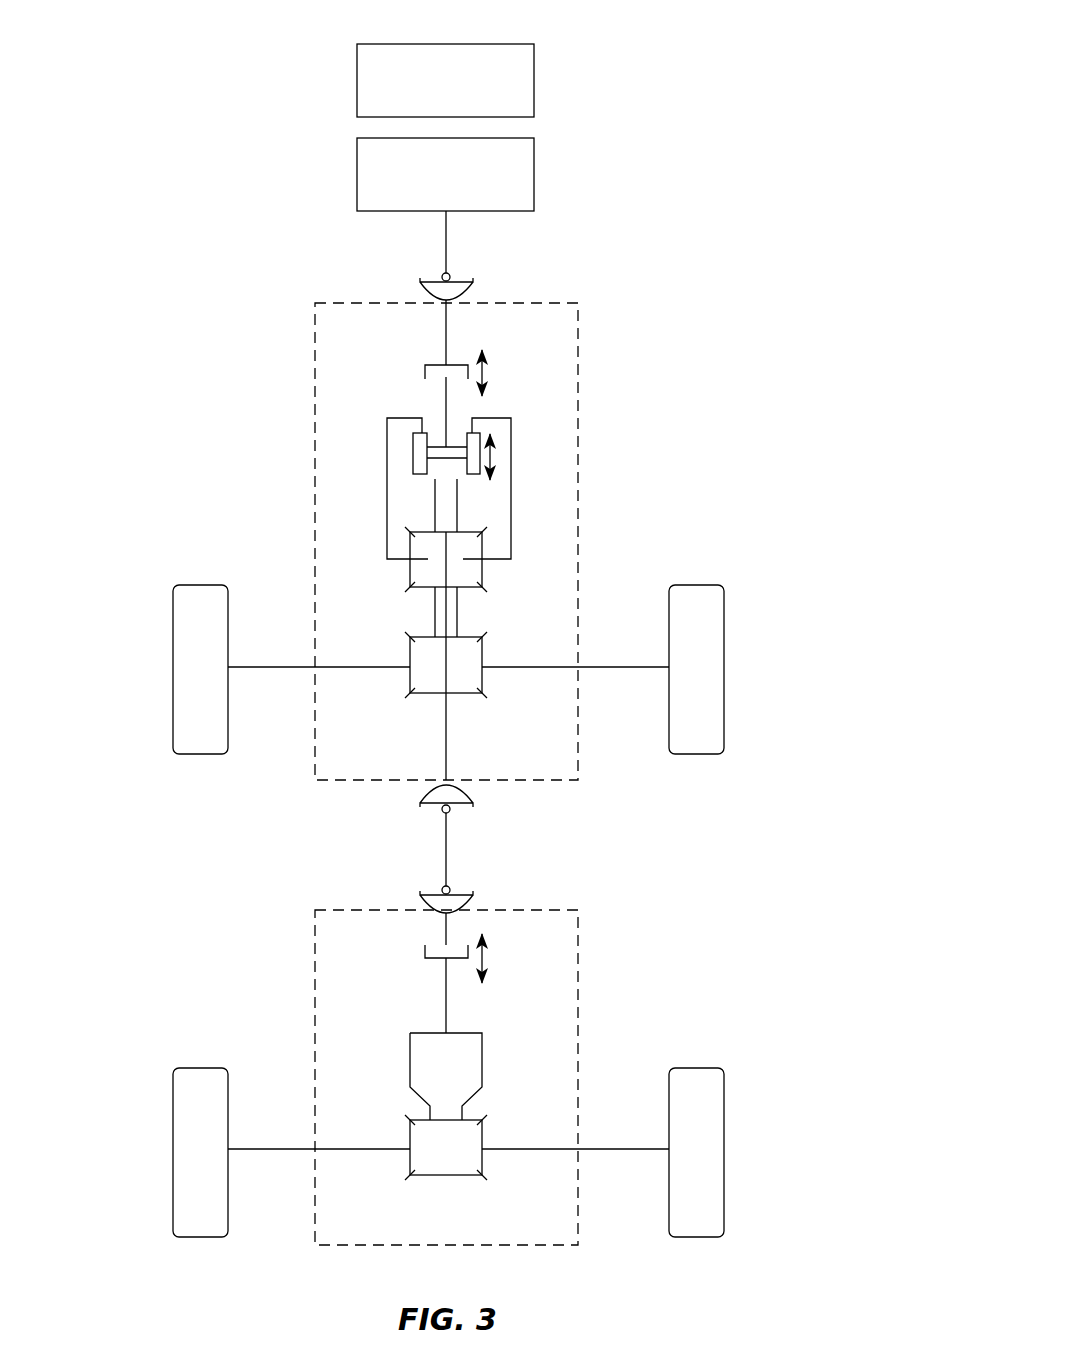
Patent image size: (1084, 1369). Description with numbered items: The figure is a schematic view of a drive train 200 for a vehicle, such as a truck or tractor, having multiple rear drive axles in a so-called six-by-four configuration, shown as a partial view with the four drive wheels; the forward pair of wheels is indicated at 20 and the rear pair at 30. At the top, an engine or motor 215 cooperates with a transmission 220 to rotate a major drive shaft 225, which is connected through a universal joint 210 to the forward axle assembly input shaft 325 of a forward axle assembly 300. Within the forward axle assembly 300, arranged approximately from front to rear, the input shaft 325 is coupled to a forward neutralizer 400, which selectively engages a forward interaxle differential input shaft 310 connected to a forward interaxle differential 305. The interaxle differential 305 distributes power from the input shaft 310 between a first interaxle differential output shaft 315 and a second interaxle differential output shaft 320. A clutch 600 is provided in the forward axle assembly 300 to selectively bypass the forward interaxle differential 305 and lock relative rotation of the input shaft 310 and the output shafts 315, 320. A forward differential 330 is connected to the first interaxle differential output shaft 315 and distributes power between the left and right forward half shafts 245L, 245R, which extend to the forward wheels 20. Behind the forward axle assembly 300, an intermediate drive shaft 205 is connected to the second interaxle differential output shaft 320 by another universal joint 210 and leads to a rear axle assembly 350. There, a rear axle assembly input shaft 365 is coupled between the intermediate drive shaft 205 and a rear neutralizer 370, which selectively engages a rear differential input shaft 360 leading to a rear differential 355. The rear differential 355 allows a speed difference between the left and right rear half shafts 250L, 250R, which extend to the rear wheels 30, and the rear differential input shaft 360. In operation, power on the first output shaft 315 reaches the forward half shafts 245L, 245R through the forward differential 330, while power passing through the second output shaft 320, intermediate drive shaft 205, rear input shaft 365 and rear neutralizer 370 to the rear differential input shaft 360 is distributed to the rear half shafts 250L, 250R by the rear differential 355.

The drive train 200 is at (640, 40).
The engine or motor 215 is at (461, 101).
The transmission 220 is at (461, 196).
The major drive shaft 225 is at (453, 245).
The universal joint 210 is at (481, 288).
The forward axle assembly 300 is at (591, 330).
The forward axle assembly input shaft 325 is at (455, 335).
The forward neutralizer 400 is at (419, 368).
The forward interaxle differential input shaft 310 is at (444, 388).
The forward interaxle differential 305 is at (513, 468).
The clutch 600 is at (411, 463).
The first interaxle differential output shaft 315 is at (434, 608).
The second interaxle differential output shaft 320 is at (448, 659).
The forward differential 330 is at (410, 680).
The left forward half shaft 245L is at (275, 668).
The right forward half shaft 245R is at (609, 668).
The front wheels 20 is at (742, 645).
The intermediate drive shaft 205 is at (453, 848).
The rear axle assembly 350 is at (591, 938).
The rear axle assembly input shaft 365 is at (458, 921).
The rear neutralizer 370 is at (419, 953).
The rear differential input shaft 360 is at (439, 992).
The rear differential 355 is at (455, 1178).
The left rear half shaft 250L is at (284, 1150).
The right rear half shaft 250R is at (600, 1150).
The rear wheels 30 is at (742, 1124).